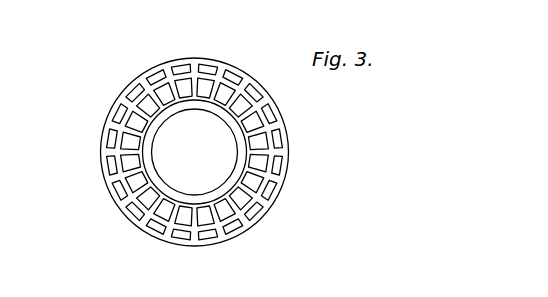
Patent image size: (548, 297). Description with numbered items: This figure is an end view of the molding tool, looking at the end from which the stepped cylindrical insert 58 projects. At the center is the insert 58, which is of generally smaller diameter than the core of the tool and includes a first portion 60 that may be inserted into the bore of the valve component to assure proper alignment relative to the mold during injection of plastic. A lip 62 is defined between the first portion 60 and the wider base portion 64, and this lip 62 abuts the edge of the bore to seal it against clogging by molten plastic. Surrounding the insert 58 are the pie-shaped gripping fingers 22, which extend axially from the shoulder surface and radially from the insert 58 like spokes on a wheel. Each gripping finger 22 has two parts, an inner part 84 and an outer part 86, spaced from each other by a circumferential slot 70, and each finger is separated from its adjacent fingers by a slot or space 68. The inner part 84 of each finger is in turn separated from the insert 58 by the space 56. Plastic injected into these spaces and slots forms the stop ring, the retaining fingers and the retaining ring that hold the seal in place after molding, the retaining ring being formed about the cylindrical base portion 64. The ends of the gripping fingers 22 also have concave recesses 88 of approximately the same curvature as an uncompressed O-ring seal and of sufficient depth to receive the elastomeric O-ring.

The gripping fingers 22 is at (223, 60).
The space 56 is at (159, 222).
The stepped cylindrical insert 58 is at (218, 121).
The first portion 60 is at (200, 183).
The lip 62 is at (283, 125).
The base portion 64 is at (240, 128).
The slot 68 is at (152, 102).
The circumferential slot 70 is at (113, 110).
The inner part 84 is at (122, 141).
The outer part 86 is at (108, 165).
The concave recesses 88 is at (277, 190).